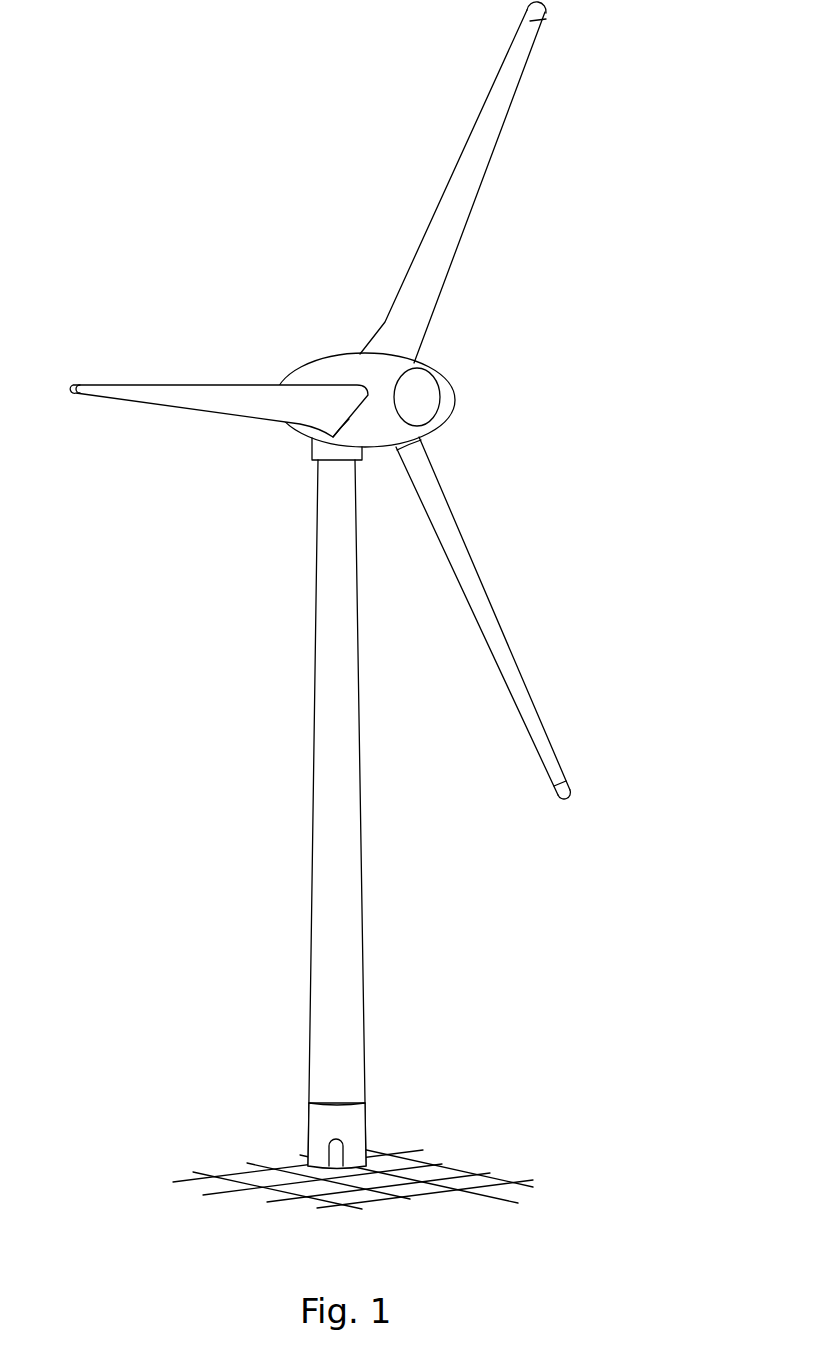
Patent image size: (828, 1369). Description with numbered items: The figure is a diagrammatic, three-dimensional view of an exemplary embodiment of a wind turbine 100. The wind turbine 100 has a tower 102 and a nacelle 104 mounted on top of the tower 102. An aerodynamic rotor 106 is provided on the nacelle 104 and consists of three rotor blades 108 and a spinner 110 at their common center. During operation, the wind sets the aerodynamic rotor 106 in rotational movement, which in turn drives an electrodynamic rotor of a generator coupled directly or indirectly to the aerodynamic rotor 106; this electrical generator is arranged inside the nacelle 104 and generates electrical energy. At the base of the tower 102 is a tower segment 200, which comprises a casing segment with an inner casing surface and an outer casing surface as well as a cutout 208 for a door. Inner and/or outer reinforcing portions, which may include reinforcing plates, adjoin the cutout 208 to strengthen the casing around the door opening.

The wind turbine 100 is at (373, 585).
The tower 102 is at (348, 803).
The nacelle 104 is at (330, 370).
The aerodynamic rotor 106 is at (373, 400).
The rotor blades 108 is at (487, 138).
The spinner 110 is at (425, 398).
The tower segment 200 is at (339, 1116).
The cutout 208 is at (328, 1153).